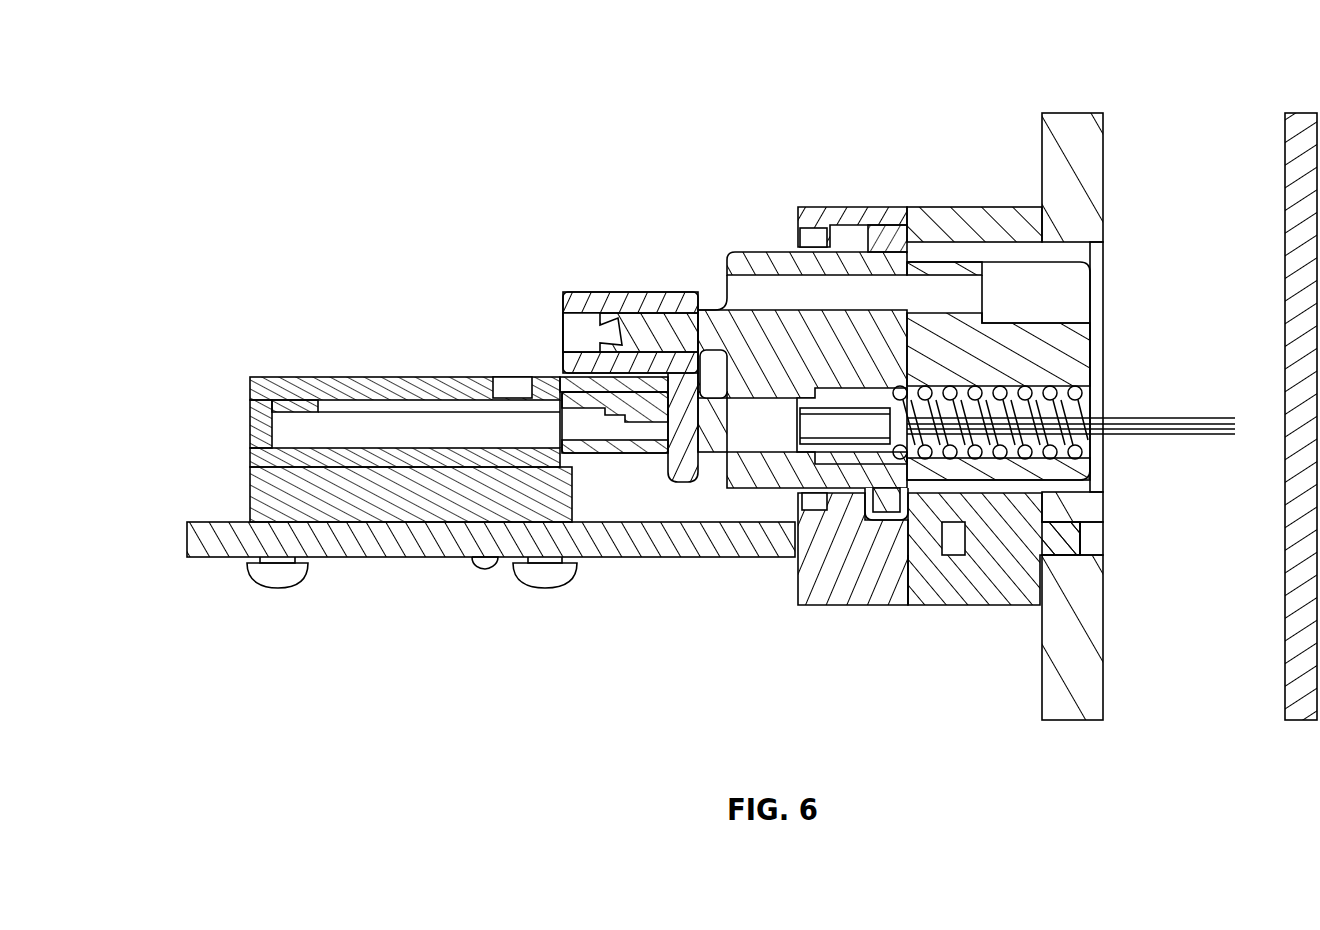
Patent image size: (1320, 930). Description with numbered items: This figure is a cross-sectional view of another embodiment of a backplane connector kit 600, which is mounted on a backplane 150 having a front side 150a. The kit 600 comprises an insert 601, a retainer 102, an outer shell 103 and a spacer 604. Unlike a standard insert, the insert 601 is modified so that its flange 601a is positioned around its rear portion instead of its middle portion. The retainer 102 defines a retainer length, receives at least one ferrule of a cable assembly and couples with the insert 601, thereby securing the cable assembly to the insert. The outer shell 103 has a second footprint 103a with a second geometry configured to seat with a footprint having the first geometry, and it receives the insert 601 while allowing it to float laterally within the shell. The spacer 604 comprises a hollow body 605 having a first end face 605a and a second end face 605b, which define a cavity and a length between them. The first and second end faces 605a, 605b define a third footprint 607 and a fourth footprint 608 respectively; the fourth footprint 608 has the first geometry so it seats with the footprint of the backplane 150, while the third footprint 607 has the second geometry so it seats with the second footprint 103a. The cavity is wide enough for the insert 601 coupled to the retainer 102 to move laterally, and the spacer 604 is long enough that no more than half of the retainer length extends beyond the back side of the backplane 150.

The backplane connector kit 600 is at (925, 66).
The backplane 150 is at (1084, 408).
The front side 150a is at (1042, 563).
The outer shell 103 is at (838, 218).
The second footprint 103a is at (917, 597).
The insert 601 is at (740, 263).
The flange 601a is at (884, 240).
The retainer 102 is at (1065, 357).
The first end face 605a is at (1149, 572).
The third footprint 607 is at (1083, 538).
The second end face 605b is at (839, 609).
The fourth footprint 608 is at (907, 565).
The spacer 604 is at (984, 628).
The hollow body 605 is at (972, 605).